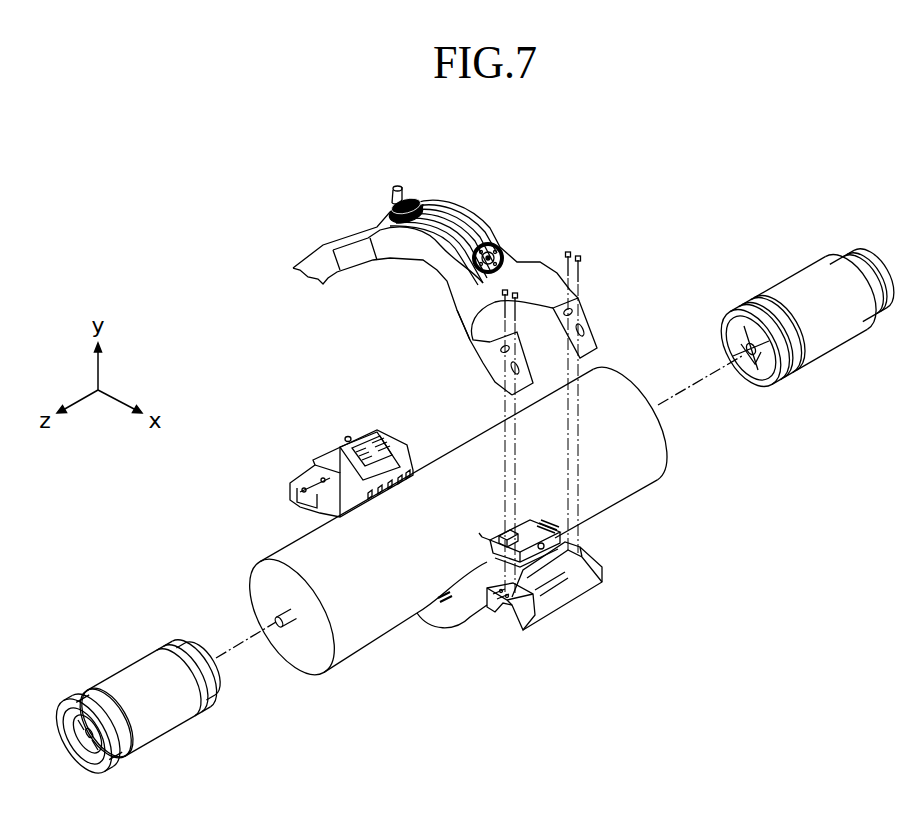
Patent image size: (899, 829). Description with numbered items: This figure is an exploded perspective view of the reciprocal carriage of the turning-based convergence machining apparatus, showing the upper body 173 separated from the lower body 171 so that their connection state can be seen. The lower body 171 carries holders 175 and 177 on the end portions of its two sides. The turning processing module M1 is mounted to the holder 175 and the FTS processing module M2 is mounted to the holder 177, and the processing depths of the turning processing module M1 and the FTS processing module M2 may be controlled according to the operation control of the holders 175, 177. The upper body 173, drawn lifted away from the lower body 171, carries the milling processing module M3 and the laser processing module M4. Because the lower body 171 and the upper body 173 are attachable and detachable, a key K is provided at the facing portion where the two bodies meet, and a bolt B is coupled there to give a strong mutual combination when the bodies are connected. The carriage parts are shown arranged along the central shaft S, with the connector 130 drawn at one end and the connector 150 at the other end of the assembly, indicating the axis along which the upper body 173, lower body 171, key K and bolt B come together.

The shaft S is at (260, 593).
The first connector 130 is at (124, 673).
The second connector 150 is at (805, 284).
The upper body 173 is at (487, 358).
The bolt B is at (478, 333).
The milling processing module M3 is at (417, 197).
The laser processing module M4 is at (507, 233).
The holder 177 is at (330, 452).
The FTS processing module M2 is at (374, 432).
The lower body 171 is at (440, 617).
The key K is at (497, 607).
The holder 175 is at (528, 522).
The turning processing module M1 is at (500, 530).